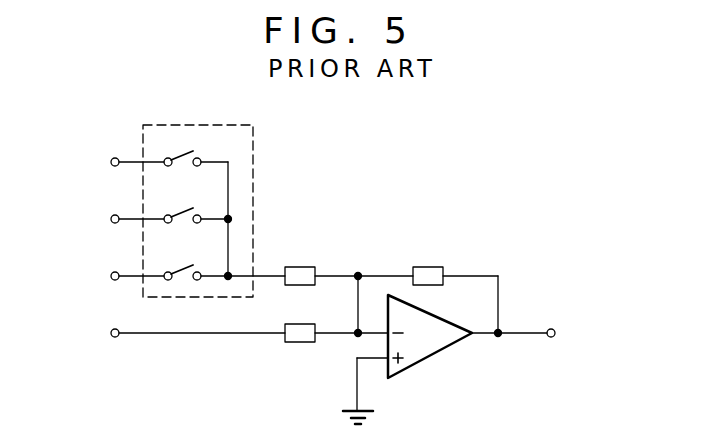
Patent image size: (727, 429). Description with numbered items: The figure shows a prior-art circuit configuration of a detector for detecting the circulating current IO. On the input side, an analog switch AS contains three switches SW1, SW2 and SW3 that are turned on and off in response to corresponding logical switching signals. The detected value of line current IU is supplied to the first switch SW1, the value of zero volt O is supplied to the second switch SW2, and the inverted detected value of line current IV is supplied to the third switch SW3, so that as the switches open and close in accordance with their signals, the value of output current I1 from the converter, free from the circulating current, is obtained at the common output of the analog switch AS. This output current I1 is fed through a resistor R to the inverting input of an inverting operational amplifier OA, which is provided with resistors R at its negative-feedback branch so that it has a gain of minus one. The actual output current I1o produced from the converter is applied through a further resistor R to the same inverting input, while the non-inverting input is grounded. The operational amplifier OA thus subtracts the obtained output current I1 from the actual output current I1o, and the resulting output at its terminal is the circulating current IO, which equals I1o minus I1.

The analog switch AS is at (224, 125).
The switch SW1 is at (196, 150).
The switch SW2 is at (196, 207).
The switch SW3 is at (196, 264).
The resistor R is at (364, 291).
The inverting operational amplifier OA is at (430, 336).
The output current I1 is at (272, 275).
The line current IU is at (121, 163).
The zero volt value O is at (126, 220).
The line current IV is at (115, 277).
The actual output current I1o is at (176, 334).
The circulating current IO is at (556, 335).